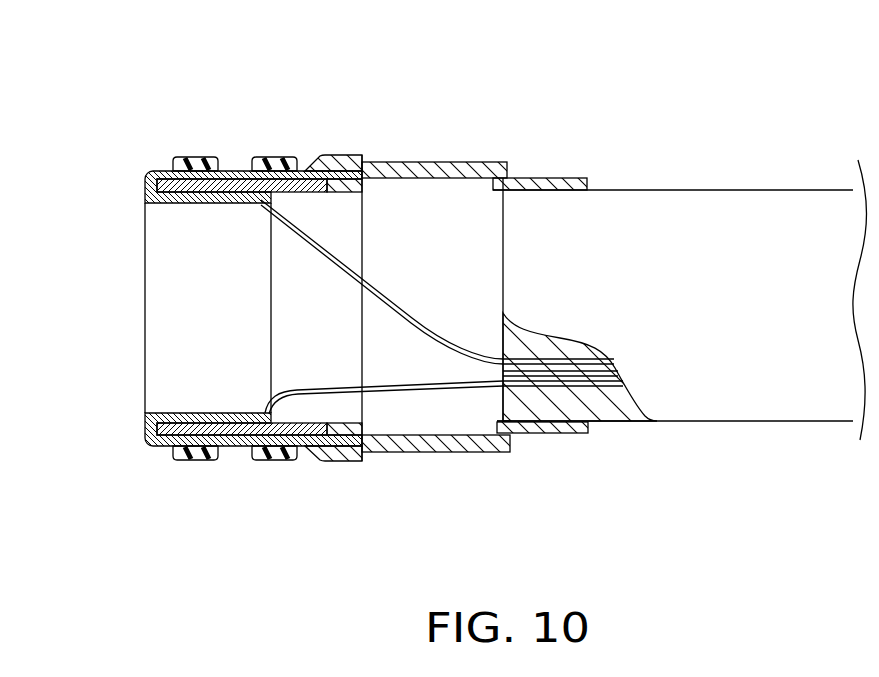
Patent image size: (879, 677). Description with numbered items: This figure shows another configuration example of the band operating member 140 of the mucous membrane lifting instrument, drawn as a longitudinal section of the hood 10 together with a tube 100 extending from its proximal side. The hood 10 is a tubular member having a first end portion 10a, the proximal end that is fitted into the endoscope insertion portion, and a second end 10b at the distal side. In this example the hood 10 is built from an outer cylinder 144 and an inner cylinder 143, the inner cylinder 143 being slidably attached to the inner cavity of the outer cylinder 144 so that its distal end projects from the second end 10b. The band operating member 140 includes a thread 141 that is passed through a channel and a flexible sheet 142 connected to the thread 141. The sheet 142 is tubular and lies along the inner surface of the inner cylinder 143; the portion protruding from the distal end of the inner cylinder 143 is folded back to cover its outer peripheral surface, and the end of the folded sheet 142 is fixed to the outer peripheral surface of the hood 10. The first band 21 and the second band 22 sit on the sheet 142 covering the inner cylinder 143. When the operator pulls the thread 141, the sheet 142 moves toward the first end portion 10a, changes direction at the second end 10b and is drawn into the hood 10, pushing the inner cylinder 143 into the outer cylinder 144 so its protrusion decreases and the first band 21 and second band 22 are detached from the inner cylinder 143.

The hood 10 is at (406, 161).
The first end portion 10a is at (520, 446).
The second end 10b is at (145, 368).
The first band 21 is at (205, 157).
The second band 22 is at (277, 157).
The tube 100 is at (735, 200).
The band operating member 140 is at (468, 148).
The thread 141 is at (439, 322).
The flexible sheet 142 is at (167, 447).
The inner cylinder 143 is at (290, 297).
The outer cylinder 144 is at (441, 168).